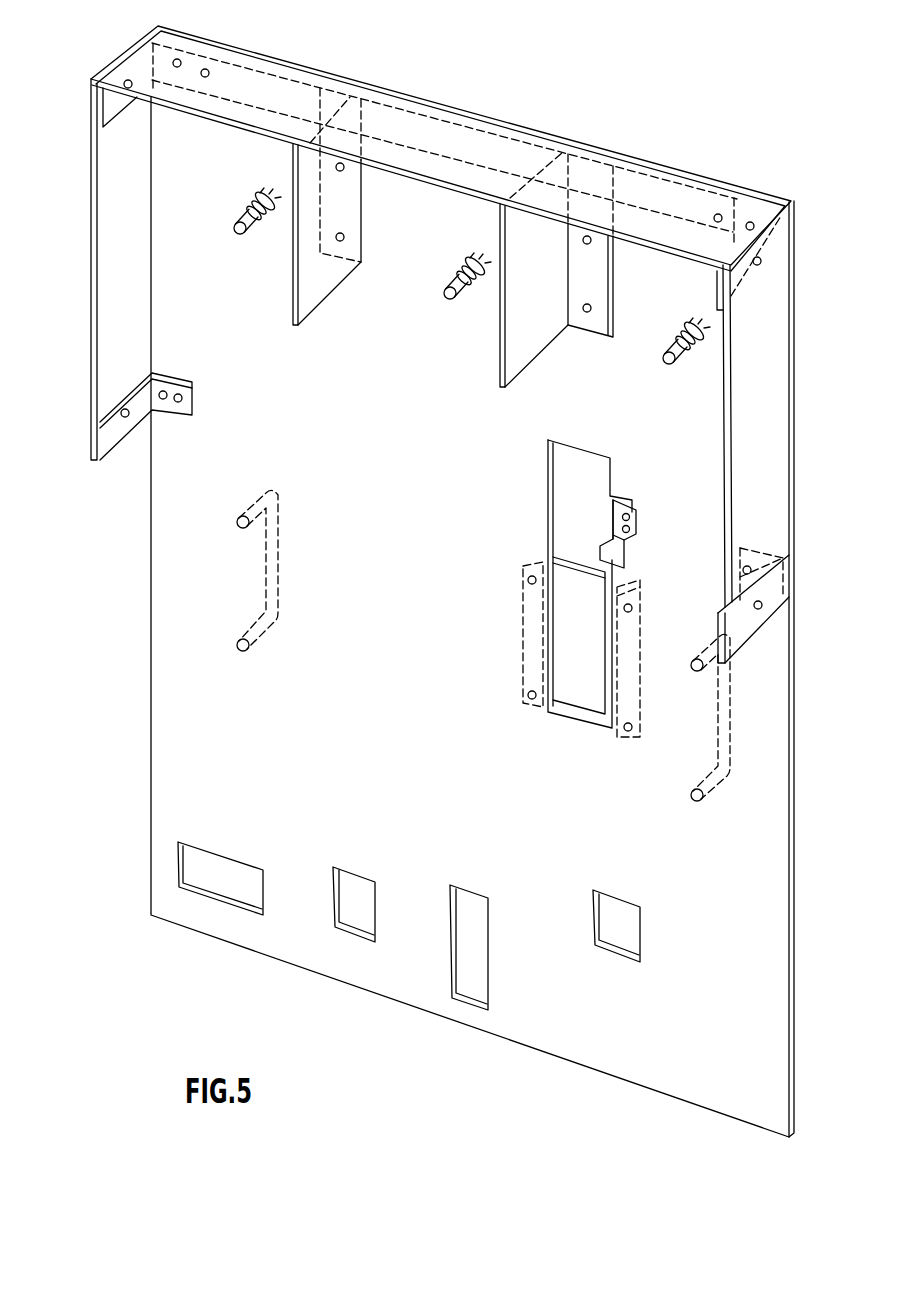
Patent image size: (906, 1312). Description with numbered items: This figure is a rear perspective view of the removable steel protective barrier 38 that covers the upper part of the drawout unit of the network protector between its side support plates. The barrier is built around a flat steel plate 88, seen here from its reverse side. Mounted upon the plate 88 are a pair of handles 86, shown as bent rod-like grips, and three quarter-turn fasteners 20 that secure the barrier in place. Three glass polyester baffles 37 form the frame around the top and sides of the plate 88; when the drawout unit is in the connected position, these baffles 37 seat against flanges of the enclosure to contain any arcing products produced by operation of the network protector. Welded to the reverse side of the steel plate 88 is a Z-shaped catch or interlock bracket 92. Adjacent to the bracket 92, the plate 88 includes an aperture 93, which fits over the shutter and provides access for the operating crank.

The quarter-turn fastener 20 is at (258, 201).
The glass polyester baffle 37 is at (230, 72).
The protective barrier 38 is at (215, 991).
The handle 86 is at (242, 514).
The flat steel plate 88 is at (167, 508).
The interlock bracket 92 is at (634, 551).
The aperture 93 is at (577, 460).